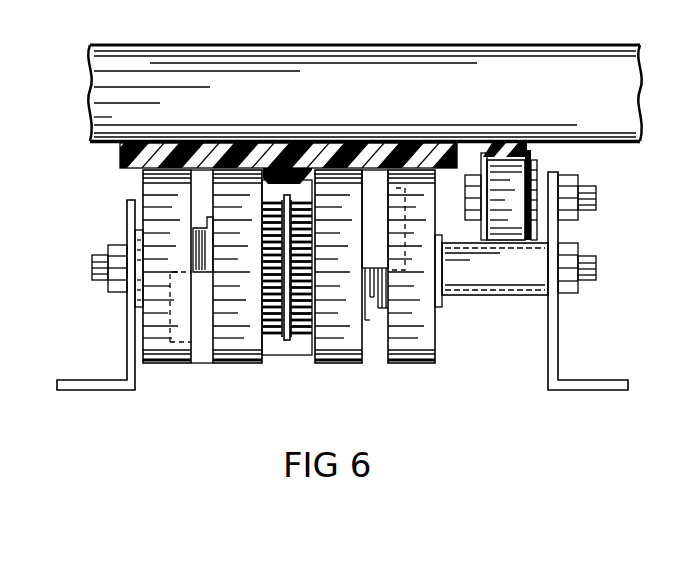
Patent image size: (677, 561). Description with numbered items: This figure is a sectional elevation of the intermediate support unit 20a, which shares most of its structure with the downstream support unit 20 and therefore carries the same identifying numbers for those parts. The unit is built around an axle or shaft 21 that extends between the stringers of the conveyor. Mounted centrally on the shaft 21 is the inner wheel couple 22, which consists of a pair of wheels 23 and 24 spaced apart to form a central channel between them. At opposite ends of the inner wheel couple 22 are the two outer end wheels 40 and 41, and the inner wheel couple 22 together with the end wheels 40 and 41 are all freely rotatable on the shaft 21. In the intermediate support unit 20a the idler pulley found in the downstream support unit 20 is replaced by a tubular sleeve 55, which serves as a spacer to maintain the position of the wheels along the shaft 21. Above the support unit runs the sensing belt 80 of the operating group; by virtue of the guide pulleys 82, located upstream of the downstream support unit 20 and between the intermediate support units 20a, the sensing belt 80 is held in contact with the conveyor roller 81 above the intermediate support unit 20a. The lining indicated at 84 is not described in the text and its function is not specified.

The conveyor roller 81 is at (465, 57).
The friction lining on rail 84 is at (128, 150).
The sensing belt 80 is at (513, 150).
The guide pulley 82 is at (531, 160).
The downstream support unit 20 is at (112, 332).
The intermediate support unit 20a is at (594, 348).
The axle 21 is at (585, 262).
The end wheel 40 is at (167, 365).
The wheel 23 is at (237, 365).
The inner wheel couple 22 is at (284, 362).
The wheel 24 is at (340, 365).
The end wheel 41 is at (415, 363).
The tubular sleeve 55 is at (490, 297).